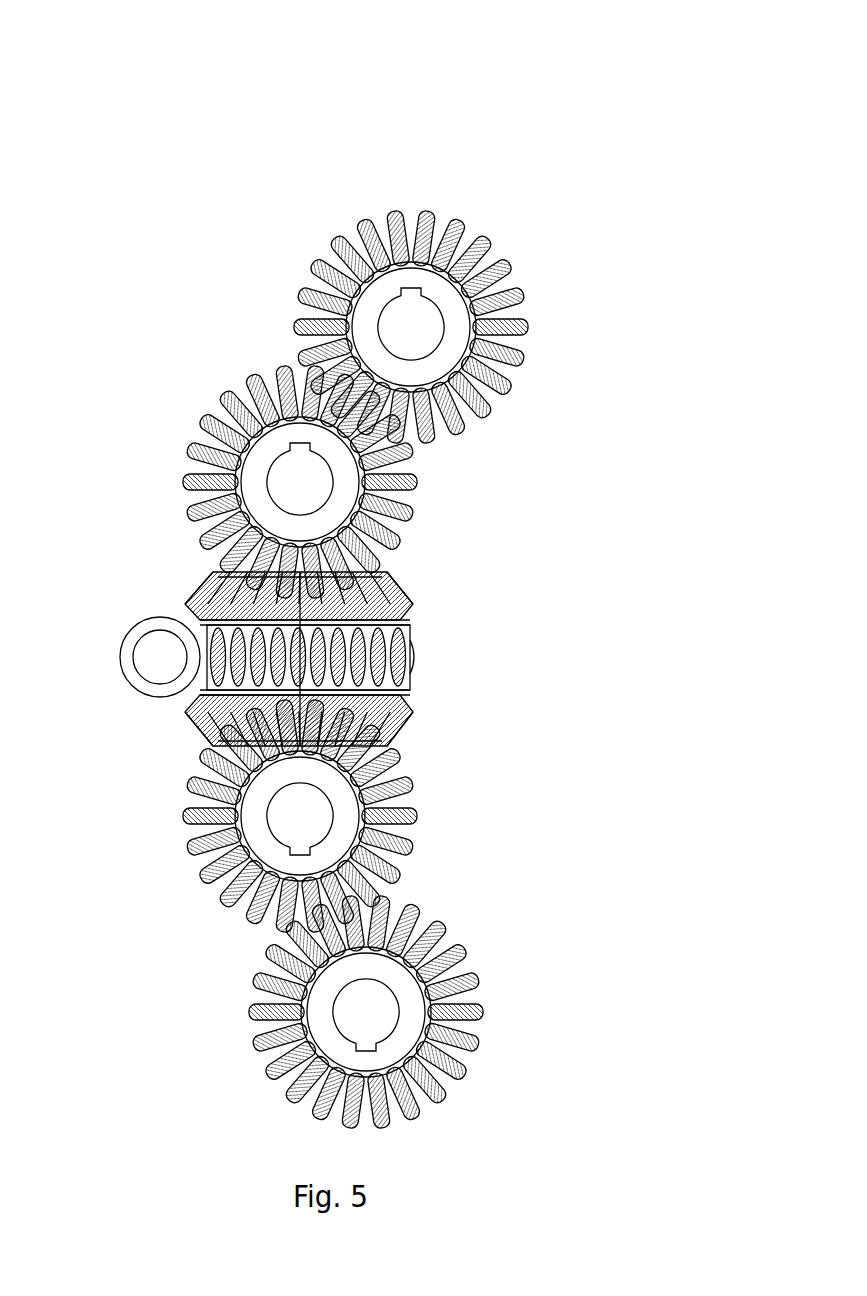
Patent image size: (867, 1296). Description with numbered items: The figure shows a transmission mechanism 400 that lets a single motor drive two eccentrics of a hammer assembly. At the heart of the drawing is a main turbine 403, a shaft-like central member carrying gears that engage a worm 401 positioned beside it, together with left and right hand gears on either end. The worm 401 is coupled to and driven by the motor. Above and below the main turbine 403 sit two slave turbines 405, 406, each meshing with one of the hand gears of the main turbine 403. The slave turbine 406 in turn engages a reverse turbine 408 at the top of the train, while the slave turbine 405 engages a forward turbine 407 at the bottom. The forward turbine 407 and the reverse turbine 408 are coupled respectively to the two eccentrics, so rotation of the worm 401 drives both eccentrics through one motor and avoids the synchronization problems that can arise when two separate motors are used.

The transmission mechanism 400 is at (503, 83).
The worm 401 is at (130, 645).
The main turbine 403 is at (422, 633).
The slave turbine 405 is at (413, 798).
The slave turbine 406 is at (207, 427).
The forward turbine 407 is at (255, 985).
The reverse turbine 408 is at (495, 250).